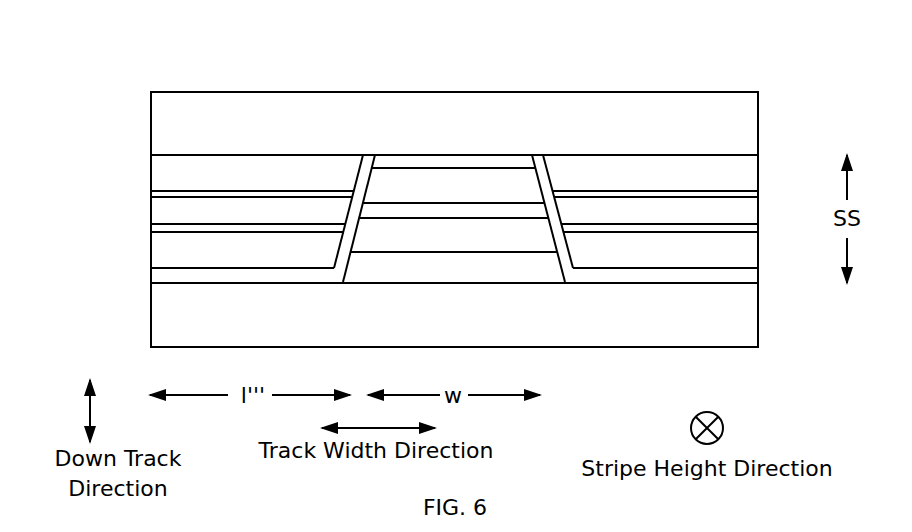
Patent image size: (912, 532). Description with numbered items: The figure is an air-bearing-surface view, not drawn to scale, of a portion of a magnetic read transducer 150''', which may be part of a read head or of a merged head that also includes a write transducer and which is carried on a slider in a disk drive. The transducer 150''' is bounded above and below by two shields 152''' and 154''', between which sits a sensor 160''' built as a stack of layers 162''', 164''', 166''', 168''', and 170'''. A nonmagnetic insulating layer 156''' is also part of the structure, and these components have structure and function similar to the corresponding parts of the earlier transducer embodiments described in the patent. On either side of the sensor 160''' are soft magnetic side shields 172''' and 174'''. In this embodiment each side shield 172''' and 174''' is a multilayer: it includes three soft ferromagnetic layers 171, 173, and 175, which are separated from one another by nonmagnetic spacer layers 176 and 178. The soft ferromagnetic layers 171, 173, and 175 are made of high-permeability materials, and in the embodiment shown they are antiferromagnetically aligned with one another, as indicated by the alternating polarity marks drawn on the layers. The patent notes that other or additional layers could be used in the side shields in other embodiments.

The magnetic read transducer 150''' is at (454, 181).
The shield 152''' is at (505, 321).
The shield 154''' is at (489, 100).
The nonmagnetic insulating layer 156''' is at (433, 337).
The sensor 160''' is at (479, 230).
The layer 162''' is at (307, 329).
The layer 164''' is at (593, 329).
The layer 166''' is at (616, 108).
The layer 168''' is at (339, 109).
The layer 170''' is at (468, 115).
The soft magnetic side shield 172''' is at (697, 199).
The soft magnetic side shield 174''' is at (200, 204).
The soft ferromagnetic layer 175 is at (151, 163).
The nonmagnetic spacer layer 178 is at (151, 197).
The soft ferromagnetic layer 173 is at (151, 213).
The nonmagnetic spacer layer 176 is at (173, 233).
The soft ferromagnetic layer 171 is at (168, 267).